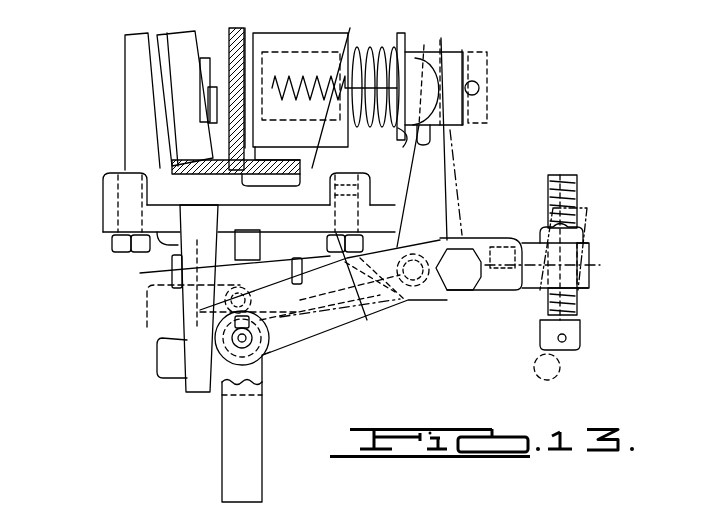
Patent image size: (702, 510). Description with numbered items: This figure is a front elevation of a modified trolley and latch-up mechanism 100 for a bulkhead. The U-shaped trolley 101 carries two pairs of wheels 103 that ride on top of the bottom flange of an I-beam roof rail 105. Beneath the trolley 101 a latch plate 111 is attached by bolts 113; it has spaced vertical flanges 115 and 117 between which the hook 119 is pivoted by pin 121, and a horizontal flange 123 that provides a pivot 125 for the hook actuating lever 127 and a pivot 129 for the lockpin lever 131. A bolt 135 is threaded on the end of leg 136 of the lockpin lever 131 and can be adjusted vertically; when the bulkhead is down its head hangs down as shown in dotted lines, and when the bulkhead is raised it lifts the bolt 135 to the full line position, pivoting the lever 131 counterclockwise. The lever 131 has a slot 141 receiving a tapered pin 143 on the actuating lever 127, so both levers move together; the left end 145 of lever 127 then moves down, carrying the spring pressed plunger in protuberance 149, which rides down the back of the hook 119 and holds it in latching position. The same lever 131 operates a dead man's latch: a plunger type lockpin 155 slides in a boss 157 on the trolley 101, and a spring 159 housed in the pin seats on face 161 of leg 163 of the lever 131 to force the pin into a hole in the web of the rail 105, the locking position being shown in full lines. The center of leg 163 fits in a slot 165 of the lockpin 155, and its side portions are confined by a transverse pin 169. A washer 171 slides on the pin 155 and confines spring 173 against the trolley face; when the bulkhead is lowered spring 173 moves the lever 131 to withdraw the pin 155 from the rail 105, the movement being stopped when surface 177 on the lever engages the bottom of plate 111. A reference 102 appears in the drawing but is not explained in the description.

The trolley and latch-up mechanism 100 is at (100, 133).
The trolley 101 is at (138, 90).
The housing portion 102 is at (360, 502).
The wheels 103 is at (167, 68).
The I-beam roof rail 105 is at (238, 60).
The latch plate 111 is at (110, 218).
The bolts 113 is at (128, 248).
The vertical flange 115 is at (200, 392).
The vertical flange 117 is at (285, 303).
The hook 119 is at (230, 453).
The pin 121 is at (172, 272).
The horizontal flange 123 is at (420, 230).
The pivot 125 is at (483, 334).
The hook actuating lever 127 is at (147, 320).
The pivot 129 is at (367, 320).
The lockpin lever 131 is at (522, 232).
The bolt 135 is at (567, 352).
The leg 136 is at (494, 236).
The slot 141 is at (505, 334).
The tapered pin 143 is at (590, 250).
The left end 145 is at (163, 362).
The protuberance 149 is at (270, 352).
The lockpin 155 is at (222, 92).
The boss 157 is at (242, 178).
The spring 159 is at (334, 76).
The face 161 is at (470, 106).
The leg 163 is at (390, 204).
The slot 165 is at (155, 502).
The transverse pin 169 is at (450, 67).
The washer 171 is at (229, 334).
The spring 173 is at (403, 142).
The surface 177 is at (450, 236).